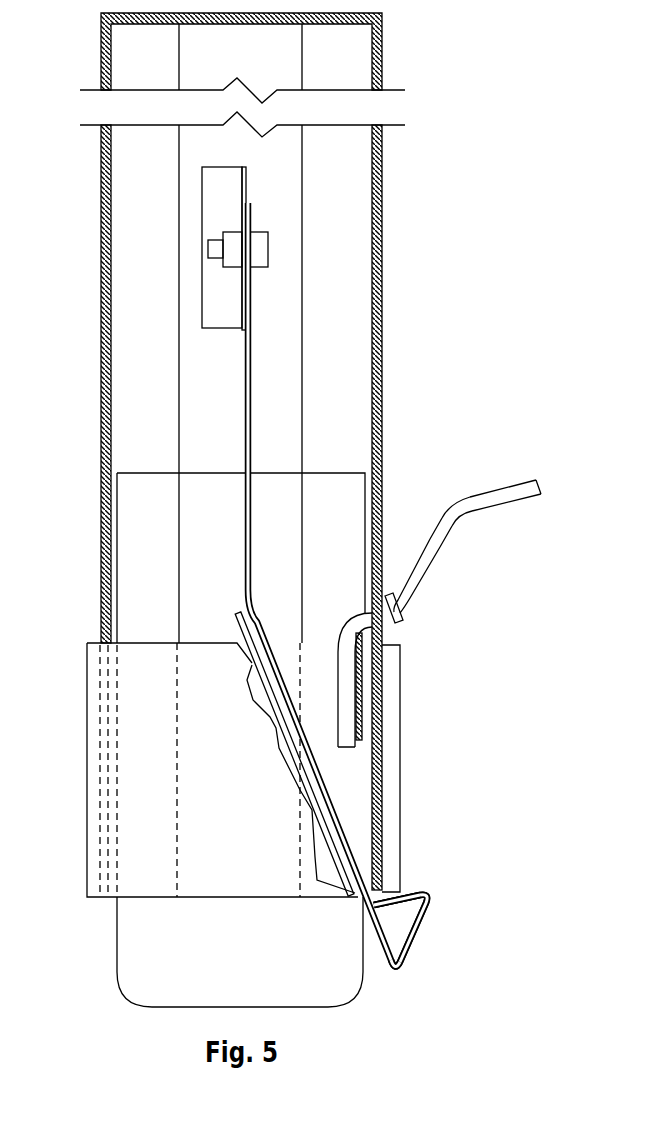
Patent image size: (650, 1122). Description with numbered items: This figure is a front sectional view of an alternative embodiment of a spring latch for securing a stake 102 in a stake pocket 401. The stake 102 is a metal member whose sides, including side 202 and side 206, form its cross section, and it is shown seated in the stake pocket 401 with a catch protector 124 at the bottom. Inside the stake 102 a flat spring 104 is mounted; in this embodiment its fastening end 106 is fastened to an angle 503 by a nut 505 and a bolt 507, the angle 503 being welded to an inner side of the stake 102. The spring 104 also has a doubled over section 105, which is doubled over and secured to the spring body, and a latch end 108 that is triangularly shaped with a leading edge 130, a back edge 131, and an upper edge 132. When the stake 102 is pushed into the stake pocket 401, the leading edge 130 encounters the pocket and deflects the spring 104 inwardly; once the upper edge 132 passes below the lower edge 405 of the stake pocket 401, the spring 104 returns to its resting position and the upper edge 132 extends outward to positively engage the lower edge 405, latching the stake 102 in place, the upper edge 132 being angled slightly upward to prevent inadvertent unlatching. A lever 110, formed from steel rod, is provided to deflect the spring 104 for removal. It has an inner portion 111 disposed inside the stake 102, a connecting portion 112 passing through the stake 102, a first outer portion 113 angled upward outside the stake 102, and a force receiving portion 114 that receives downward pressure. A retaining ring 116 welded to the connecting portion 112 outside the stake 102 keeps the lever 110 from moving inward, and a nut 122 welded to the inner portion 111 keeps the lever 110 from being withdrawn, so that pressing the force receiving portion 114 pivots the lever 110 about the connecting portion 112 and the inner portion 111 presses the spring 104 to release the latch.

The stake 102 is at (393, 210).
The spring 104 is at (337, 585).
The doubled over section 105 is at (247, 657).
The fastening end 106 is at (248, 280).
The latch end 108 is at (442, 913).
The lever 110 is at (492, 548).
The inner portion 111 is at (350, 737).
The connecting portion 112 is at (398, 598).
The first outer portion 113 is at (437, 540).
The force receiving portion 114 is at (477, 500).
The retaining ring 116 is at (398, 624).
The nut 122 is at (362, 685).
The catch protector 124 is at (117, 935).
The leading edge 130 is at (432, 900).
The back edge 131 is at (394, 972).
The upper edge 132 is at (415, 888).
The side 202 is at (100, 388).
The side 206 is at (382, 363).
The stake pocket 401 is at (133, 750).
The lower edge 405 is at (385, 880).
The angle 503 is at (243, 183).
The nut 505 is at (228, 234).
The bolt 507 is at (260, 246).